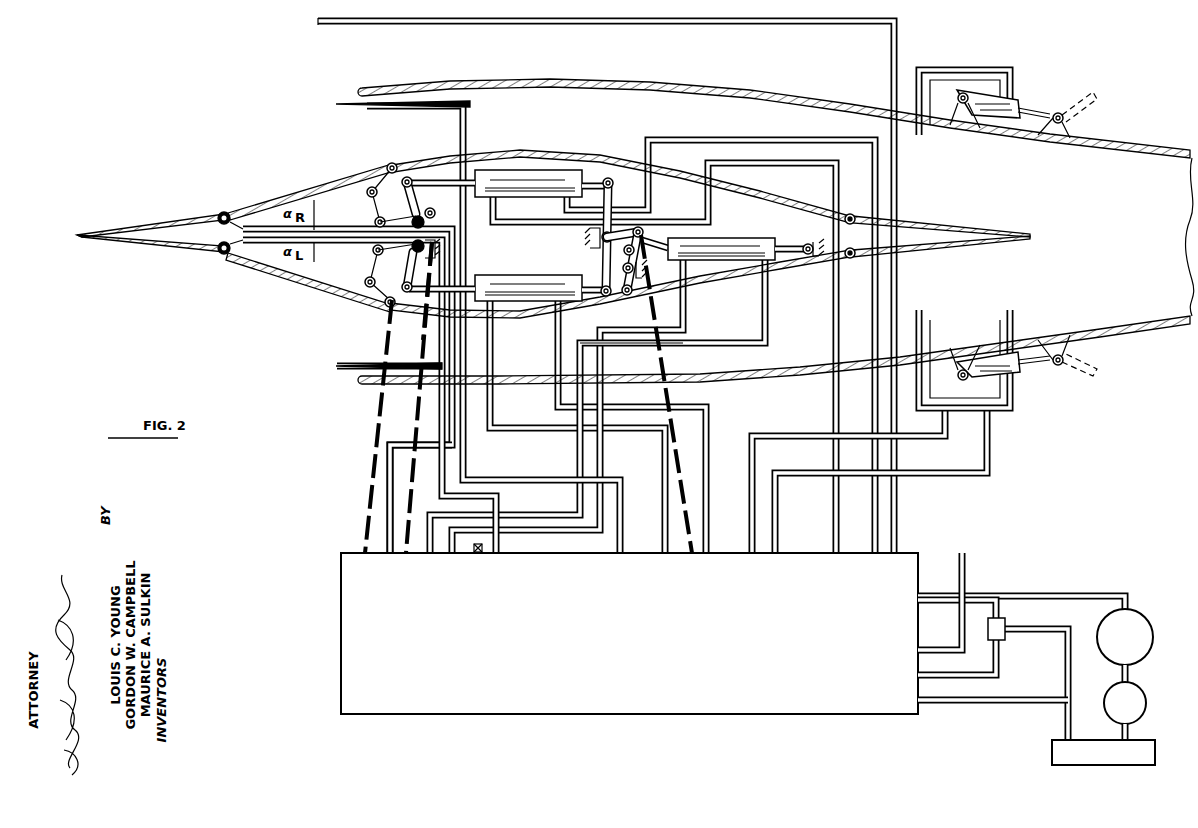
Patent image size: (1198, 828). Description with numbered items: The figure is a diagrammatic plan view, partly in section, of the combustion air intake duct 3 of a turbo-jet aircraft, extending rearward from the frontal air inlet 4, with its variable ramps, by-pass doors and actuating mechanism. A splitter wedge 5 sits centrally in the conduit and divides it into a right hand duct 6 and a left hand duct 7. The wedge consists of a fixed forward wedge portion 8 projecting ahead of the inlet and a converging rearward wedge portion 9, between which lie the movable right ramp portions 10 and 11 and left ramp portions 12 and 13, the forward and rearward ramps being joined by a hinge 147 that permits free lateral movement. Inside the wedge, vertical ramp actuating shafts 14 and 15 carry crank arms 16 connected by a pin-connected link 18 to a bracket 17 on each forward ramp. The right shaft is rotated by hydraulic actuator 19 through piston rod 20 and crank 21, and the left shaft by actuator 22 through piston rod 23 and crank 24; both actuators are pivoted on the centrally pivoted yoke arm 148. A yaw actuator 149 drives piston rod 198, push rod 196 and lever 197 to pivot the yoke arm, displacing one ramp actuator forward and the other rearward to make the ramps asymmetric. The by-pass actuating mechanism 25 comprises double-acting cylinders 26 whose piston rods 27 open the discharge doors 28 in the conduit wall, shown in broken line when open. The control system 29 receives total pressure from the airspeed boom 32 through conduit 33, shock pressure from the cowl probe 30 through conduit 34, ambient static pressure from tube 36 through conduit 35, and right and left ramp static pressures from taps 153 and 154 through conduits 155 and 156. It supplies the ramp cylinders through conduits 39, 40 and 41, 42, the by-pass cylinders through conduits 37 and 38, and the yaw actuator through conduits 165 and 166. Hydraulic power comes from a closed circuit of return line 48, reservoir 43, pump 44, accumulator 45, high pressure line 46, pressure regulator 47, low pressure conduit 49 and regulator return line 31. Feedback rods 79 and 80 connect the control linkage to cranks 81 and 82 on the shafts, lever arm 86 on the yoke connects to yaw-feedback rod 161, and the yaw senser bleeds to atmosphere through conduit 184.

The combustion air intake duct 3 is at (776, 180).
The frontal air inlet 4 is at (312, 149).
The splitter wedge 5 is at (500, 142).
The right hand duct 6 is at (482, 110).
The left hand duct 7 is at (540, 372).
The fixed forward wedge portion 8 is at (138, 243).
The rearward wedge portion 9 is at (553, 221).
The forward right ramp portion 10 is at (332, 188).
The rearward right ramp portion 11 is at (570, 153).
The forward left ramp portion 12 is at (289, 270).
The rearward left ramp portion 13 is at (712, 280).
The right ramp actuating shaft 14 is at (397, 195).
The left ramp actuating shaft 15 is at (394, 272).
The crank arm 16 is at (374, 220).
The bracket 17 is at (370, 185).
The pin-connected link 18 is at (345, 228).
The right ramp hydraulic actuator 19 is at (505, 185).
The piston rod 20 is at (430, 182).
The crank 21 is at (428, 210).
The left ramp hydraulic actuator 22 is at (528, 284).
The piston rod 23 is at (440, 300).
The crank 24 is at (413, 291).
The by-pass actuating mechanism 25 is at (1016, 224).
The double-acting cylinder 26 is at (1008, 100).
The piston rod 27 is at (1055, 112).
The discharge door 28 is at (1088, 143).
The control system 29 is at (665, 712).
The shock sensing probe 30 is at (347, 107).
The pressure regulator by-pass and return line 31 is at (1066, 650).
The airspeed boom 32 is at (348, 24).
The pneumatic sensing conduit 33 is at (705, 24).
The pneumatic sensing conduit 34 is at (462, 227).
The pneumatic sensing conduit 35 is at (962, 640).
The ambient static pressure tube 36 is at (966, 560).
The hydraulic conduit 37 is at (750, 478).
The hydraulic conduit 38 is at (778, 512).
The hydraulic conduit 39 is at (800, 163).
The hydraulic conduit 40 is at (760, 140).
The hydraulic conduit 41 is at (525, 430).
The hydraulic conduit 42 is at (562, 407).
The reservoir 43 is at (1150, 752).
The pump 44 is at (1145, 695).
The accumulator 45 is at (1140, 617).
The high pressure conduit line 46 is at (994, 596).
The pressure regulator 47 is at (1006, 628).
The hydraulic return line 48 is at (978, 704).
The low pressure conduit 49 is at (997, 667).
The ramp-feedback rod 79 is at (414, 433).
The ramp-feedback rod 80 is at (375, 441).
The crank 81 is at (436, 215).
The crank 82 is at (354, 250).
The lever arm 86 is at (642, 230).
The hinge 147 is at (395, 163).
The yoke arm 148 is at (612, 202).
The yaw actuator 149 is at (745, 236).
The static pressure tube 153 is at (232, 214).
The static pressure tube 154 is at (232, 254).
The conduit 155 is at (330, 228).
The conduit 156 is at (436, 263).
The yaw-feedback rod 161 is at (668, 330).
The hydraulic conduit 165 is at (684, 320).
The hydraulic conduit 166 is at (766, 310).
The conduit 184 is at (483, 548).
The push rod 196 is at (625, 295).
The lever 197 is at (622, 258).
The piston rod 198 is at (660, 247).